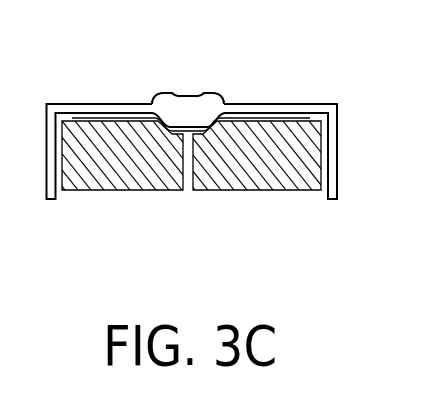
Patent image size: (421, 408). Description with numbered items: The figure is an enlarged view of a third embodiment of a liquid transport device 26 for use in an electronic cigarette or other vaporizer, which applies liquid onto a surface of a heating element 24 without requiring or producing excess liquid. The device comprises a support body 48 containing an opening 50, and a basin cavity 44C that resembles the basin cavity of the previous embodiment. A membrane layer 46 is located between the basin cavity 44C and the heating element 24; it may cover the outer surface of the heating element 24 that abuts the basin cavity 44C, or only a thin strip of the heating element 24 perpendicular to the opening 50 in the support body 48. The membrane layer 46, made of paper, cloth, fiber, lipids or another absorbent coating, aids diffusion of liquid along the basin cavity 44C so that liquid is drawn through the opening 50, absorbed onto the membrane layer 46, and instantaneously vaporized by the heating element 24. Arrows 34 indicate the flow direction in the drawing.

The liquid transport device 26 is at (278, 27).
The heating element 24 is at (188, 105).
The membrane layer 46 is at (308, 120).
The basin cavity 44C is at (185, 136).
The support body 48 is at (284, 163).
The opening 50 is at (190, 192).
The direction arrows 34 is at (52, 203).